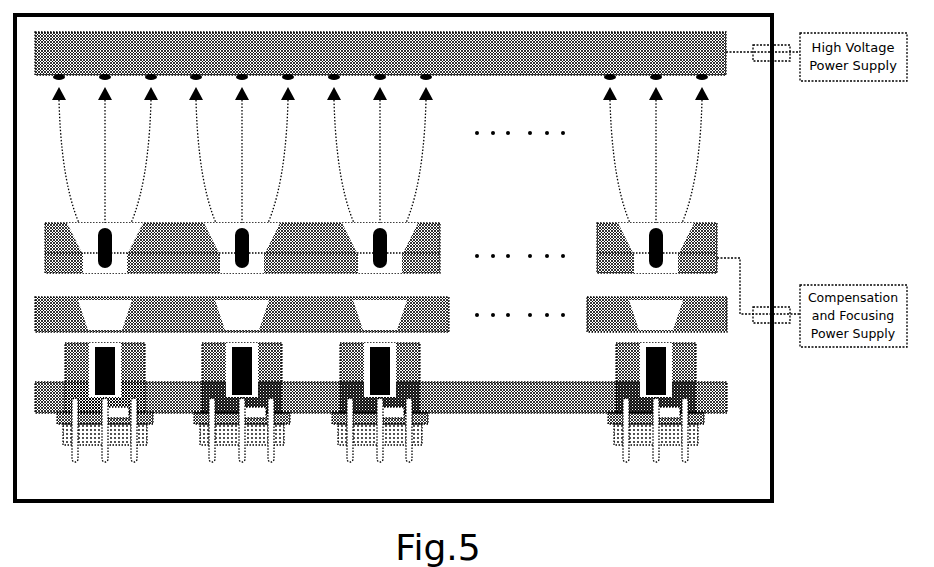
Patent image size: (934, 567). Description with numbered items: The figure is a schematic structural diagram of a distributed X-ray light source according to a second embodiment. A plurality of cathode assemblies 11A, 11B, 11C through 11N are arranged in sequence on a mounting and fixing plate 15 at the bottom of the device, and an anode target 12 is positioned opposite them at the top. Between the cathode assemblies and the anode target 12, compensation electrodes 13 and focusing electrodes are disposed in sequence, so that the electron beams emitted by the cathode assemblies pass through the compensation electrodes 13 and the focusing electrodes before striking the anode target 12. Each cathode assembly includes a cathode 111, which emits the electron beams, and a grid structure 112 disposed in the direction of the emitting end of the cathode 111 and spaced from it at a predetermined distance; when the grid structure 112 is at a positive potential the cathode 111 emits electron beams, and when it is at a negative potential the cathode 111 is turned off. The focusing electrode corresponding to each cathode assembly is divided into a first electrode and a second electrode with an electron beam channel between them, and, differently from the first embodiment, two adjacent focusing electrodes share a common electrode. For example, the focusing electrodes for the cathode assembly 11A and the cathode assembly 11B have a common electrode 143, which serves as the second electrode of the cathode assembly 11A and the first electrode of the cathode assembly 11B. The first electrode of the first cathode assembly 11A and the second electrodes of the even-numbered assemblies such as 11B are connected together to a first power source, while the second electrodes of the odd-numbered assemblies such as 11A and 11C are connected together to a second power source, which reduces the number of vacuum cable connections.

The anode target 12 is at (517, 77).
The common electrode 143 is at (182, 222).
The compensation electrodes 13 is at (450, 332).
The mounting and fixing plate 15 is at (518, 410).
The cathode 111 is at (408, 378).
The grid structure 112 is at (345, 371).
The cathode assembly 11A is at (105, 418).
The cathode assembly 11B is at (242, 418).
The cathode assembly 11C is at (388, 418).
The cathode assembly 11N is at (656, 418).